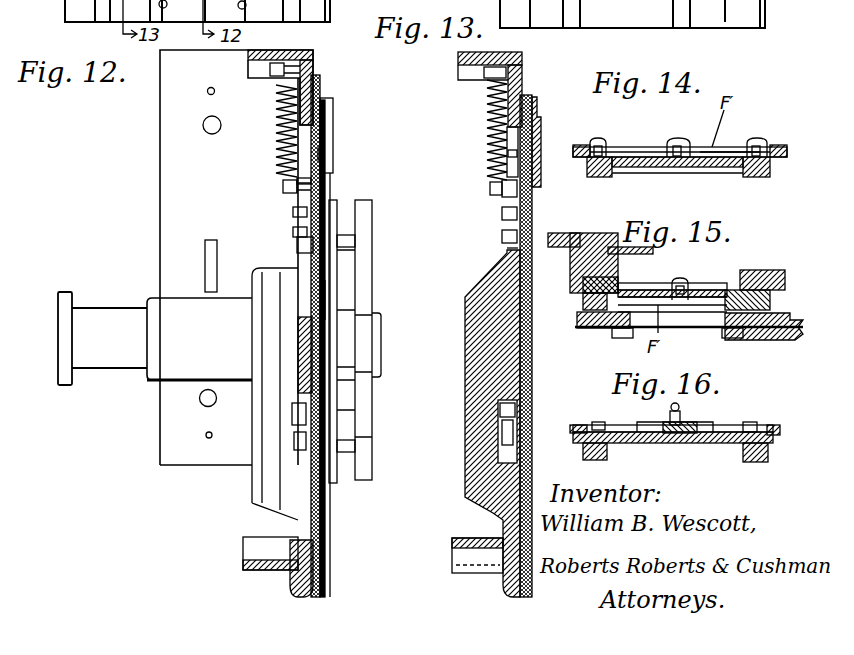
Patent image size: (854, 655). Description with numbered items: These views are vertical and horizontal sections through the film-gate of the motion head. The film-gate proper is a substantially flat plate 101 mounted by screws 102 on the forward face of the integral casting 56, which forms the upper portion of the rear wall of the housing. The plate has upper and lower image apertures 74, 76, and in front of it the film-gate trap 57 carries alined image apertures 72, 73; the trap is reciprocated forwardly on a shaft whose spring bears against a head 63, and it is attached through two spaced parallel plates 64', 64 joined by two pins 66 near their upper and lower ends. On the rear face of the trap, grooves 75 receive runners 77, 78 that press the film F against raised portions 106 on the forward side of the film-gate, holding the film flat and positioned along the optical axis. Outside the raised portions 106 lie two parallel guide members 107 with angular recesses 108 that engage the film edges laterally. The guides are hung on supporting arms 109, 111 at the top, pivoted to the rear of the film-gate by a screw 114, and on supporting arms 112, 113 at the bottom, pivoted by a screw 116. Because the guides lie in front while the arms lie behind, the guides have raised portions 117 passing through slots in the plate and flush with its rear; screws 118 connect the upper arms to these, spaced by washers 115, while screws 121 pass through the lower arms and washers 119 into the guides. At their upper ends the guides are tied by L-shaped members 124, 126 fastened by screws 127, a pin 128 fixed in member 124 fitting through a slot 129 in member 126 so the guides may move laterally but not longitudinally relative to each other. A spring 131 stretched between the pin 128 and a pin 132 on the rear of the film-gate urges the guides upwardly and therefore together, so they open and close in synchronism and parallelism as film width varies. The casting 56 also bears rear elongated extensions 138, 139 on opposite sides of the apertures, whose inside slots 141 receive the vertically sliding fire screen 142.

In FIG. 12, the integral casting 56 is at (236, 257).
In FIG. 13, the integral casting 56 is at (522, 58).
In FIG. 15, the film-gate trap 57 is at (585, 328).
In FIG. 12, the head 63 is at (63, 335).
In FIG. 12, the plate 64 is at (363, 325).
In FIG. 12, the plate 64' is at (349, 318).
In FIG. 12, the pins 66 is at (345, 240).
In FIG. 15, the image aperture 72 is at (675, 313).
In FIG. 15, the image aperture 73 is at (695, 303).
In FIG. 12, the image aperture 74 is at (325, 300).
In FIG. 15, the grooves 75 is at (580, 318).
In FIG. 12, the image aperture 76 is at (298, 533).
In FIG. 15, the runner 77 is at (705, 325).
In FIG. 15, the runner 78 is at (645, 328).
In FIG. 12, the film-gate plate 101 is at (316, 100).
In FIG. 13, the film-gate plate 101 is at (522, 105).
In FIG. 12, the screws 102 is at (240, 5).
In FIG. 14, the raised portions 106 is at (740, 168).
In FIG. 12, the guide members 107 is at (323, 115).
In FIG. 14, the guide members 107 is at (592, 176).
In FIG. 14, the angular recesses 108 is at (611, 175).
In FIG. 12, the supporting arm 109 is at (297, 250).
In FIG. 13, the supporting arm 109 is at (502, 223).
In FIG. 14, the supporting arm 109 is at (716, 150).
In FIG. 15, the supporting arm 109 is at (713, 297).
In FIG. 12, the supporting arm 111 is at (293, 242).
In FIG. 13, the supporting arm 111 is at (507, 250).
In FIG. 14, the supporting arm 111 is at (628, 147).
In FIG. 15, the supporting arm 111 is at (640, 283).
In FIG. 12, the supporting arm 112 is at (258, 500).
In FIG. 13, the supporting arm 112 is at (465, 490).
In FIG. 12, the supporting arm 113 is at (292, 455).
In FIG. 13, the supporting arm 113 is at (465, 472).
In FIG. 12, the screw 114 is at (293, 230).
In FIG. 13, the screw 114 is at (502, 243).
In FIG. 14, the screw 114 is at (677, 143).
In FIG. 15, the screw 114 is at (675, 283).
In FIG. 14, the washers 115 is at (760, 147).
In FIG. 12, the screw 116 is at (294, 440).
In FIG. 13, the screw 116 is at (500, 450).
In FIG. 13, the raised portions 117 is at (508, 134).
In FIG. 14, the raised portions 117 is at (583, 152).
In FIG. 12, the screws 118 is at (292, 213).
In FIG. 13, the screws 118 is at (502, 210).
In FIG. 13, the washers 119 is at (533, 405).
In FIG. 15, the washers 119 is at (783, 297).
In FIG. 12, the screws 121 is at (292, 412).
In FIG. 13, the screws 121 is at (498, 415).
In FIG. 12, the L-shaped member 124 is at (318, 155).
In FIG. 16, the L-shaped member 124 is at (700, 426).
In FIG. 12, the L-shaped member 126 is at (290, 180).
In FIG. 13, the L-shaped member 126 is at (538, 152).
In FIG. 16, the L-shaped member 126 is at (653, 428).
In FIG. 16, the screws 127 is at (595, 423).
In FIG. 12, the pin 128 is at (288, 180).
In FIG. 16, the pin 128 is at (685, 407).
In FIG. 16, the slot 129 is at (668, 445).
In FIG. 12, the spring 131 is at (276, 121).
In FIG. 13, the spring 131 is at (487, 119).
In FIG. 12, the pin 132 is at (275, 73).
In FIG. 13, the pin 132 is at (485, 72).
In FIG. 12, the elongated extension 138 is at (260, 445).
In FIG. 12, the elongated extension 139 is at (252, 503).
In FIG. 13, the elongated extension 139 is at (478, 502).
In FIG. 15, the elongated extension 139 is at (573, 270).
In FIG. 12, the slots 141 is at (268, 340).
In FIG. 15, the slots 141 is at (572, 256).
In FIG. 15, the fire screen 142 is at (610, 233).